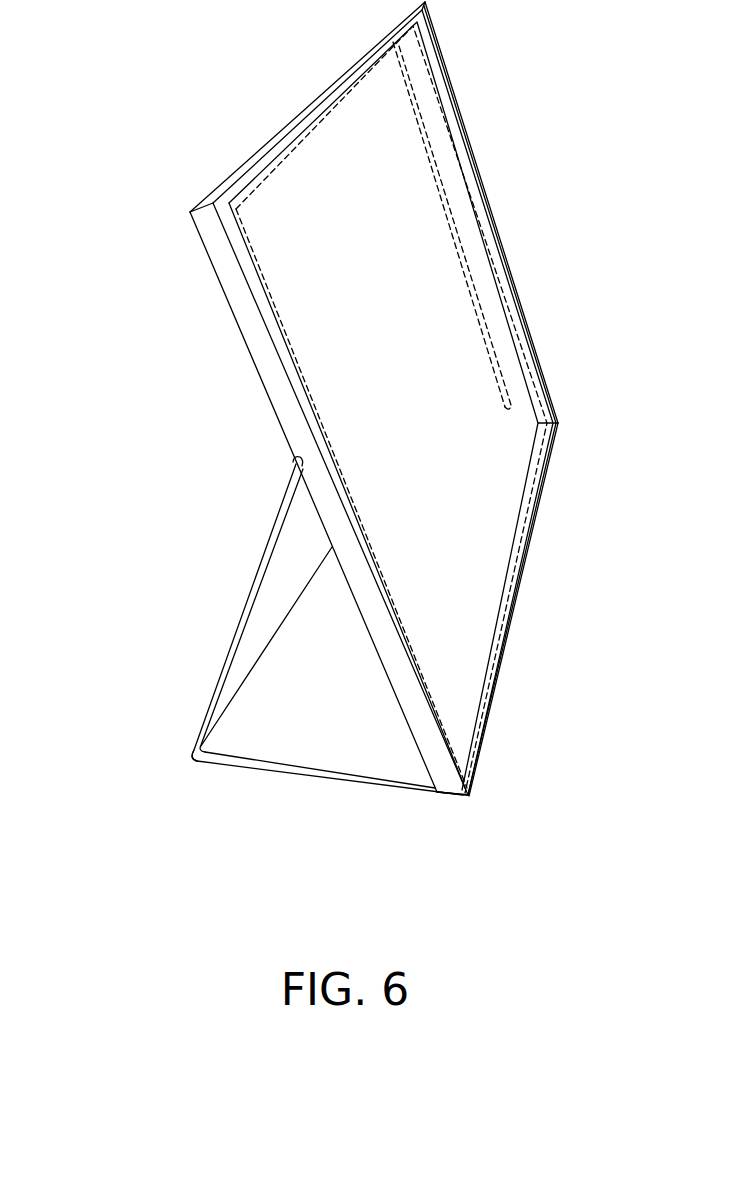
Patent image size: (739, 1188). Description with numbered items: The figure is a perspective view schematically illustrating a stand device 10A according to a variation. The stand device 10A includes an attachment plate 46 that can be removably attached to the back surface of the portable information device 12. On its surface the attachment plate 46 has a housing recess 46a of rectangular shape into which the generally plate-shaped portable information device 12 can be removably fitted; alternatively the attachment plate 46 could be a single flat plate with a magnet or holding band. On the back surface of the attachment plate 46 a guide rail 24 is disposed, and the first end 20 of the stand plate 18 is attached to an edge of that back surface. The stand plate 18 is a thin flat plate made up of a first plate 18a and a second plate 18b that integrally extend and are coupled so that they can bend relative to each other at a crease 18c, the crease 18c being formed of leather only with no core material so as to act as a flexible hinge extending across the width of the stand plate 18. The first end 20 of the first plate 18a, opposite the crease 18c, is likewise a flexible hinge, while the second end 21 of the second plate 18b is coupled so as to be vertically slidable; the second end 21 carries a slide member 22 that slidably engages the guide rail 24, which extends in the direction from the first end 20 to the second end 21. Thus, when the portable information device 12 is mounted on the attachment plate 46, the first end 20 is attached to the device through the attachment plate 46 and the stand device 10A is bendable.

The stand device 10A is at (344, 435).
The portable information device 12 is at (503, 633).
The stand plate 18 is at (268, 639).
The first plate 18a is at (245, 752).
The second plate 18b is at (215, 702).
The crease 18c is at (157, 764).
The first end 20 is at (430, 796).
The second end 21 is at (293, 458).
The slide member 22 is at (464, 229).
The guide rail 24 is at (437, 118).
The attachment plate 46 is at (392, 402).
The housing recess 46a is at (487, 562).